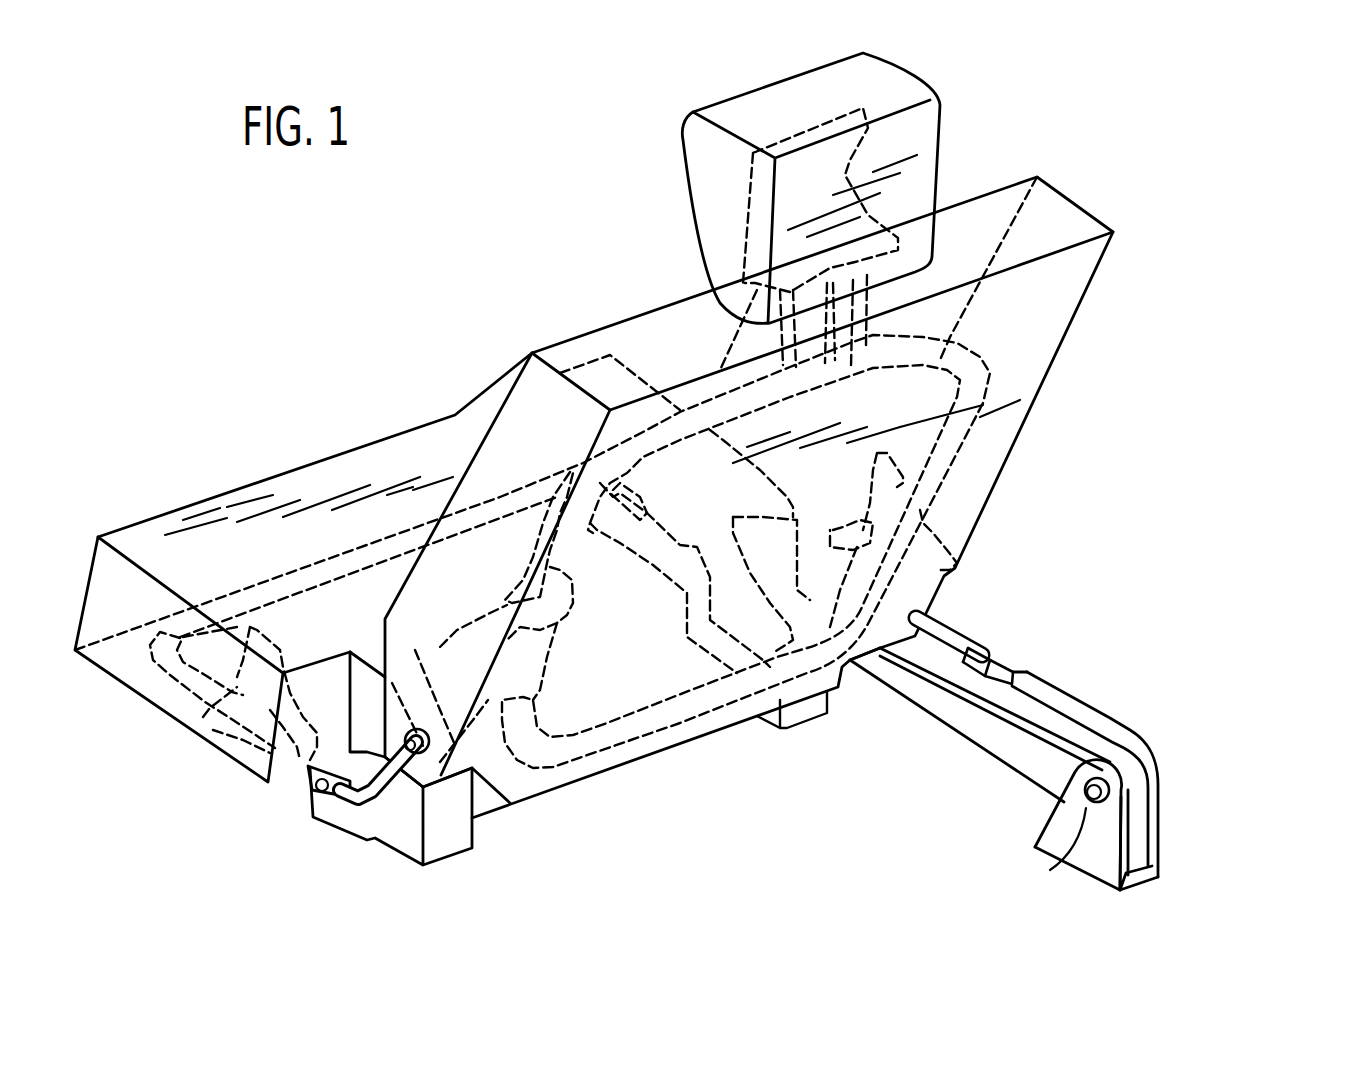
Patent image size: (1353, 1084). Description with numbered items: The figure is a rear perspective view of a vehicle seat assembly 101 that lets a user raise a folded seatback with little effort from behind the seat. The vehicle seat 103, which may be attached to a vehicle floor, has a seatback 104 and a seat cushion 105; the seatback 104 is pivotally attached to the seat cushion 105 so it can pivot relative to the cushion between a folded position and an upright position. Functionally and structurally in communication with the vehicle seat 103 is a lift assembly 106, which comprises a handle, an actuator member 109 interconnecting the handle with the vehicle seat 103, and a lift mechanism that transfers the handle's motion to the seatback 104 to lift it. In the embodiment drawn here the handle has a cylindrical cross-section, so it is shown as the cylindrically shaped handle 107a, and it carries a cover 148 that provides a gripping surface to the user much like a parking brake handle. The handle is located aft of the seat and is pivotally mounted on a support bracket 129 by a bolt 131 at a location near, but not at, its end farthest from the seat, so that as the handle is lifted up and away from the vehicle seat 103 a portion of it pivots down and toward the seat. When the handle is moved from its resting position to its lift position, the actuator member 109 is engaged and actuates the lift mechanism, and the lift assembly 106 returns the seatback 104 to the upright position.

The vehicle seat assembly 101 is at (285, 322).
The vehicle seat 103 is at (243, 457).
The seatback 104 is at (1067, 312).
The seat cushion 105 is at (413, 437).
The cover 148 is at (961, 643).
The cylindrically shaped handle 107a is at (1070, 697).
The support bracket 129 is at (1160, 822).
The actuator member 109 is at (958, 720).
The lift assembly 106 is at (993, 783).
The bolt 131 is at (1091, 805).